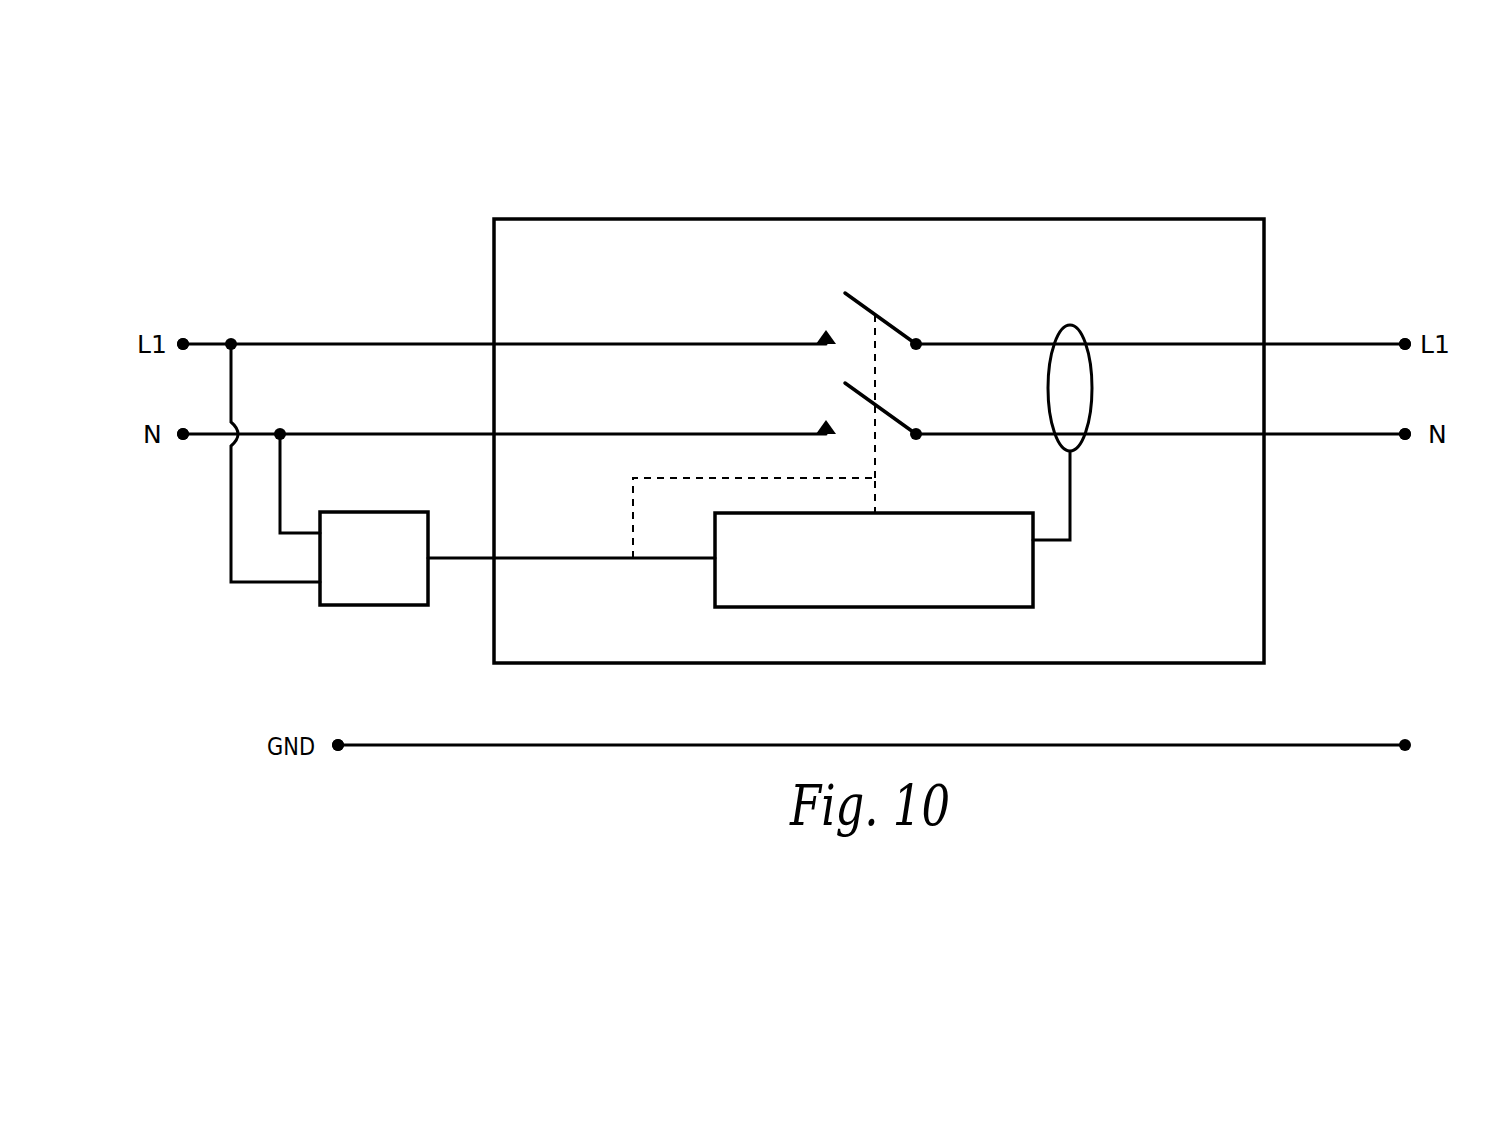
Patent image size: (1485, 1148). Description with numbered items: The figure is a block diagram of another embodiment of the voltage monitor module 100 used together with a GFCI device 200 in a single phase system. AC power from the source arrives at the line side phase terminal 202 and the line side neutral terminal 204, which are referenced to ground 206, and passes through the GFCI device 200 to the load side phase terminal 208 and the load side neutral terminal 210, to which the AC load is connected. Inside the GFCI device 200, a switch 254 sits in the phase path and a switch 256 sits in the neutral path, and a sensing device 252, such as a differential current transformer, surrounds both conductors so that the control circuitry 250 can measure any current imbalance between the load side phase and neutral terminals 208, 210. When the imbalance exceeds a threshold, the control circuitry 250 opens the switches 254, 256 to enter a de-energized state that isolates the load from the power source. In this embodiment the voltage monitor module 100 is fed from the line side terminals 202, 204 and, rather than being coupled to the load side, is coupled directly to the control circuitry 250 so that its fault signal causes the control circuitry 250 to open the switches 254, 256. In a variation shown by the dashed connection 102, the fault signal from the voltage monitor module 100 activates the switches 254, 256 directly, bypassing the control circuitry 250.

The voltage monitor module 100 is at (373, 605).
The connection 102 is at (633, 520).
The GFCI device 200 is at (676, 219).
The line side phase terminal 202 is at (184, 335).
The line side neutral terminal 204 is at (183, 445).
The ground 206 is at (338, 740).
The load side phase terminal 208 is at (1405, 338).
The load side neutral terminal 210 is at (1405, 440).
The control circuitry 250 is at (1033, 575).
The sensing device 252 is at (1092, 395).
The switch 254 is at (862, 305).
The switch 256 is at (845, 395).